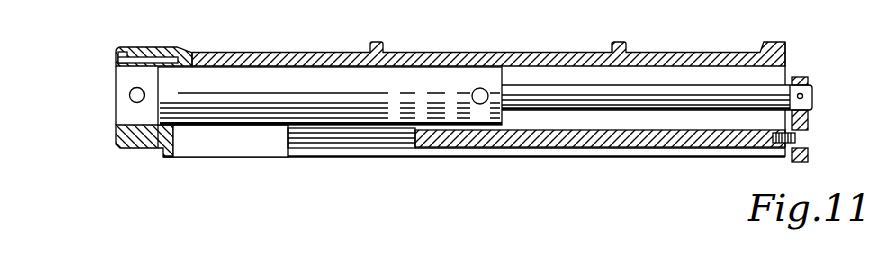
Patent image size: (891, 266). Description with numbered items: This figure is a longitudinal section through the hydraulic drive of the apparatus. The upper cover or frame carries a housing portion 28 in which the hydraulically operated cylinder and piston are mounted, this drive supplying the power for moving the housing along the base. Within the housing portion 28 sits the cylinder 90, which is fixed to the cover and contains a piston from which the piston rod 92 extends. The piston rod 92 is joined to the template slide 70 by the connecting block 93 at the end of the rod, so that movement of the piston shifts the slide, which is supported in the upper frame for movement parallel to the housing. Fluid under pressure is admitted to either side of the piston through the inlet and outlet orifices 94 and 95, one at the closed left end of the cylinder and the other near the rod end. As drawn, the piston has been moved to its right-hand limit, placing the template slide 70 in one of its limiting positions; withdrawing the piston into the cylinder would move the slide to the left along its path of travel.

The housing portion 28 is at (490, 53).
The template slide 70 is at (647, 140).
The cylinder 90 is at (278, 78).
The piston rod 92 is at (557, 93).
The connecting block 93 is at (808, 117).
The inlet and outlet orifice 94 is at (129, 96).
The inlet and outlet orifice 95 is at (478, 104).